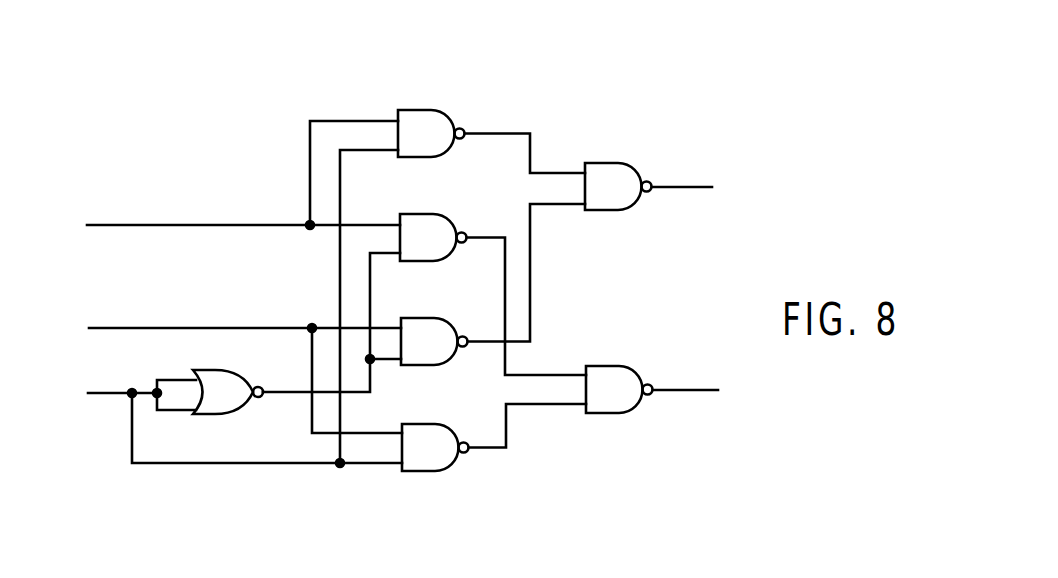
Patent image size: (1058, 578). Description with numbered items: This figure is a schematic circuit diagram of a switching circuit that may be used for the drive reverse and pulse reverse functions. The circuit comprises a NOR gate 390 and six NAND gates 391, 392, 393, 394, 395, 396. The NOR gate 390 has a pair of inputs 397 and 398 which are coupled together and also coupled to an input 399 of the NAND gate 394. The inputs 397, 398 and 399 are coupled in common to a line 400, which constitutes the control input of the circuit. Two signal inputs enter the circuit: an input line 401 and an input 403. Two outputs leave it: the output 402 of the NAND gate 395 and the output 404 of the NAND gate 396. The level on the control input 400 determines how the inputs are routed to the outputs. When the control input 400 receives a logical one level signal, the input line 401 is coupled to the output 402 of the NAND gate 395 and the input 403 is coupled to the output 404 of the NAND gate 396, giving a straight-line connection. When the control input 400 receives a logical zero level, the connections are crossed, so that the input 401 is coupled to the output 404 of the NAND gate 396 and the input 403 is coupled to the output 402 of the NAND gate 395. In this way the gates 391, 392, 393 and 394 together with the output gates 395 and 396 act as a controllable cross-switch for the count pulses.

The NOR gate 390 is at (218, 377).
The NAND gate 391 is at (421, 114).
The NAND gate 392 is at (425, 218).
The NAND gate 393 is at (426, 322).
The NAND gate 394 is at (427, 428).
The NAND gate 395 is at (603, 170).
The NAND gate 396 is at (612, 372).
The input 397 is at (190, 378).
The input 398 is at (189, 410).
The input 399 is at (402, 465).
The line 400 is at (124, 394).
The input line 401 is at (269, 224).
The output 402 is at (652, 184).
The input 403 is at (269, 327).
The output 404 is at (653, 388).